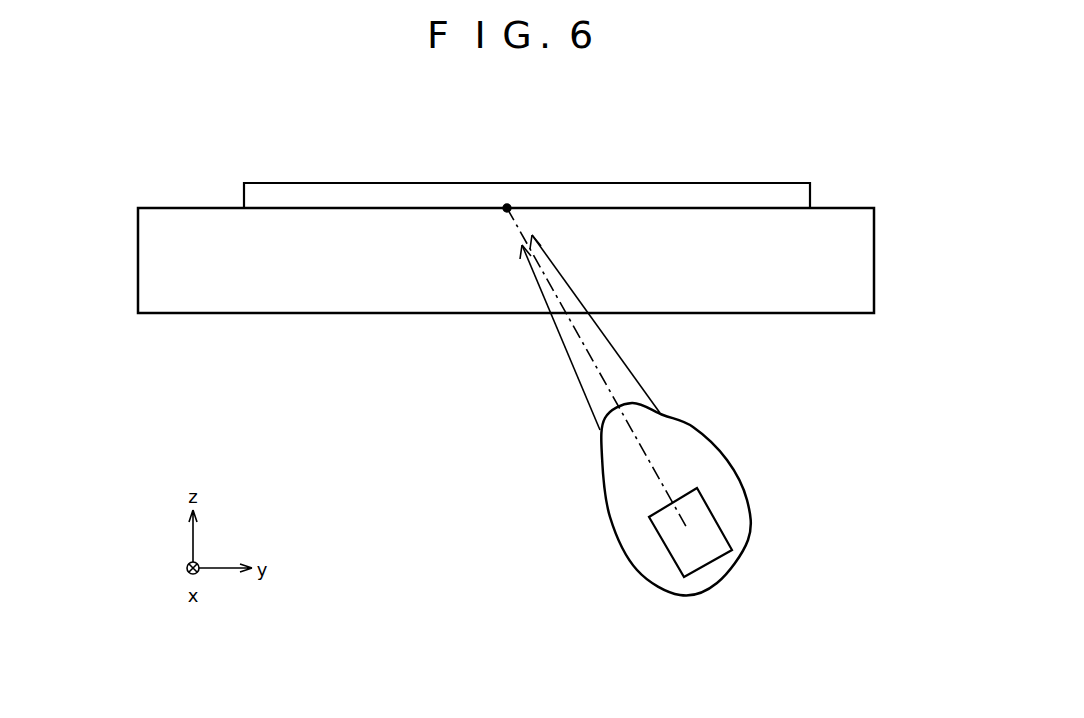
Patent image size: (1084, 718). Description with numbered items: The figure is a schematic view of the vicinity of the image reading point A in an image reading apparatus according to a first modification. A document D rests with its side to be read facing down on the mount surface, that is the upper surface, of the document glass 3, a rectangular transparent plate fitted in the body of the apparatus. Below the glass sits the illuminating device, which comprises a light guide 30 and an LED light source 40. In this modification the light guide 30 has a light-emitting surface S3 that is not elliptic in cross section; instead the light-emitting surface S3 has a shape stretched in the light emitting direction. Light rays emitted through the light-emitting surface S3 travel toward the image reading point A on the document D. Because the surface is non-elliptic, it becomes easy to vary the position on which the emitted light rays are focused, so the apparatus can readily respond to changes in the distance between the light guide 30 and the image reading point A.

The document glass 3 is at (795, 302).
The document D is at (745, 190).
The image reading point A is at (507, 206).
The light-emitting surface S3 is at (597, 425).
The light guide 30 is at (735, 517).
The LED light source 40 is at (682, 550).